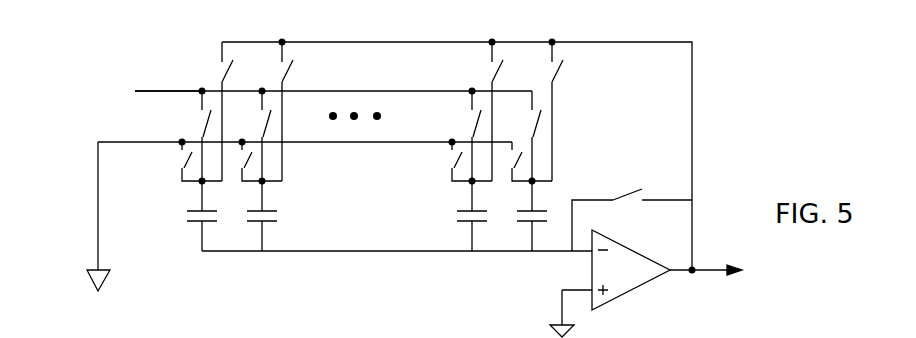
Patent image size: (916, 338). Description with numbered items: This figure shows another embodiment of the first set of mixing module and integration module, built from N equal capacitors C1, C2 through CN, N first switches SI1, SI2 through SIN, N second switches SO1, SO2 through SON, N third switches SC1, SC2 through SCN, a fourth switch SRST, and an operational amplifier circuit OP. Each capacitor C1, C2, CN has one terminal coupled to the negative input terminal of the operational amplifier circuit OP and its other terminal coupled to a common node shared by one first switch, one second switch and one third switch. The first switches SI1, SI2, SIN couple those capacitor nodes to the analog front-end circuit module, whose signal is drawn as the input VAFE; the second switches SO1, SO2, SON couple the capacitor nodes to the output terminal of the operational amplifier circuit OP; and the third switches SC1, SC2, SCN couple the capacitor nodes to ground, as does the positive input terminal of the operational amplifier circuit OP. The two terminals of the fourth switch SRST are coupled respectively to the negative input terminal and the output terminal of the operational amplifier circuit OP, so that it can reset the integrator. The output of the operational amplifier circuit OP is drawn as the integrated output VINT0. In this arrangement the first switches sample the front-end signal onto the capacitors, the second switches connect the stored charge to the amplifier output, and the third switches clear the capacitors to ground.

The analog front-end input voltage VAFE is at (144, 91).
The second switch SO1 is at (244, 111).
The second switch SO2 is at (302, 110).
The second switch SON is at (575, 110).
The first switch SI1 is at (192, 135).
The first switch SI2 is at (251, 135).
The first switch SIN is at (523, 136).
The third switch SC1 is at (187, 162).
The third switch SC2 is at (252, 162).
The third switch SCN is at (523, 163).
The capacitor C1 is at (191, 216).
The capacitor C2 is at (251, 216).
The capacitor CN is at (520, 216).
The fourth switch SRST is at (632, 211).
The operational amplifier circuit OP is at (610, 283).
The integrator output voltage VINT0 is at (738, 272).